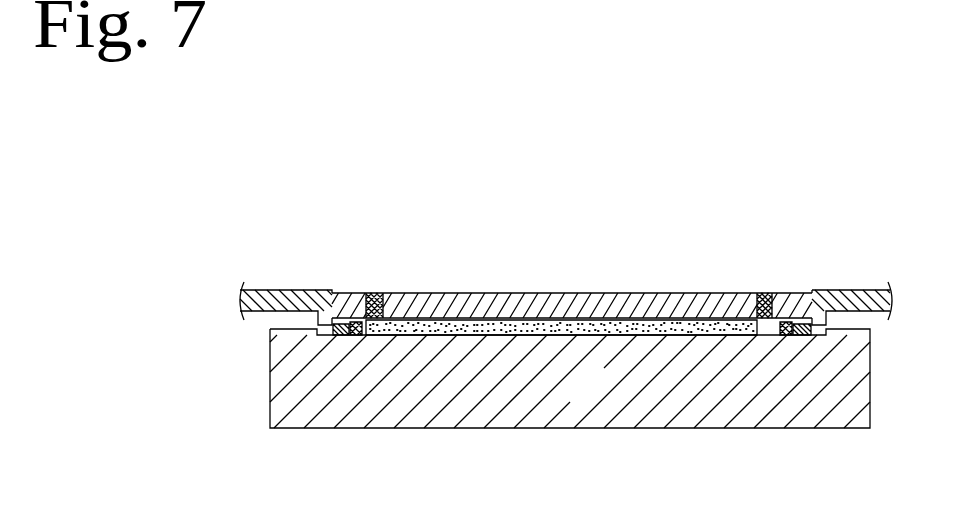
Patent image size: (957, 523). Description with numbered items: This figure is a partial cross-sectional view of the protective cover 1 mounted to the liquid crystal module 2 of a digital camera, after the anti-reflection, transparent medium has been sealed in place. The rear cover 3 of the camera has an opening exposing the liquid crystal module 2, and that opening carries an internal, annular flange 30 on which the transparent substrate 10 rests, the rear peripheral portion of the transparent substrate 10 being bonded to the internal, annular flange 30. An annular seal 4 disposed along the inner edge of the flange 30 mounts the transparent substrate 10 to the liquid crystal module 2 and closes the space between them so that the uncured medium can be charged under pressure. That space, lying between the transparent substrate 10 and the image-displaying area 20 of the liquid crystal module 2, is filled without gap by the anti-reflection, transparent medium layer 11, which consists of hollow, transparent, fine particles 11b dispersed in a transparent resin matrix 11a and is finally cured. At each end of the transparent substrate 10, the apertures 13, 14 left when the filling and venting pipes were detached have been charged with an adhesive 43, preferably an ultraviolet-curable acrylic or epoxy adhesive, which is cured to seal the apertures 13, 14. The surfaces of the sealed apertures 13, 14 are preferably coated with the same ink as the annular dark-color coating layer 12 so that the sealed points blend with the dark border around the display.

The protective cover 1 is at (627, 165).
The liquid crystal module 2 is at (585, 397).
The rear cover 3 is at (280, 290).
The annular seal 4 is at (352, 340).
The transparent substrate 10 is at (505, 305).
The anti-reflection, transparent medium layer 11 is at (665, 213).
The transparent resin matrix 11a is at (573, 316).
The hollow, transparent, fine particles 11b is at (636, 328).
The annular dark-color coating layer 12 is at (365, 293).
The aperture 13 is at (353, 293).
The aperture 14 is at (793, 293).
The image-displaying area 20 is at (673, 340).
The internal, annular flange 30 is at (328, 338).
The adhesive 43 is at (380, 293).